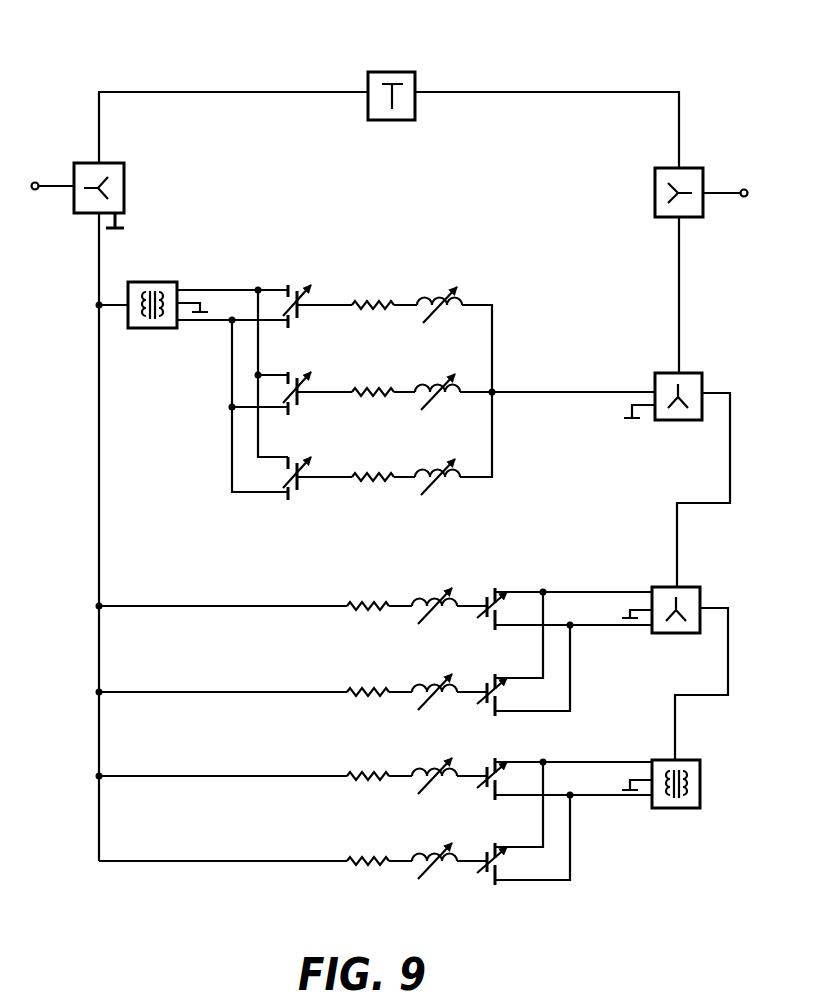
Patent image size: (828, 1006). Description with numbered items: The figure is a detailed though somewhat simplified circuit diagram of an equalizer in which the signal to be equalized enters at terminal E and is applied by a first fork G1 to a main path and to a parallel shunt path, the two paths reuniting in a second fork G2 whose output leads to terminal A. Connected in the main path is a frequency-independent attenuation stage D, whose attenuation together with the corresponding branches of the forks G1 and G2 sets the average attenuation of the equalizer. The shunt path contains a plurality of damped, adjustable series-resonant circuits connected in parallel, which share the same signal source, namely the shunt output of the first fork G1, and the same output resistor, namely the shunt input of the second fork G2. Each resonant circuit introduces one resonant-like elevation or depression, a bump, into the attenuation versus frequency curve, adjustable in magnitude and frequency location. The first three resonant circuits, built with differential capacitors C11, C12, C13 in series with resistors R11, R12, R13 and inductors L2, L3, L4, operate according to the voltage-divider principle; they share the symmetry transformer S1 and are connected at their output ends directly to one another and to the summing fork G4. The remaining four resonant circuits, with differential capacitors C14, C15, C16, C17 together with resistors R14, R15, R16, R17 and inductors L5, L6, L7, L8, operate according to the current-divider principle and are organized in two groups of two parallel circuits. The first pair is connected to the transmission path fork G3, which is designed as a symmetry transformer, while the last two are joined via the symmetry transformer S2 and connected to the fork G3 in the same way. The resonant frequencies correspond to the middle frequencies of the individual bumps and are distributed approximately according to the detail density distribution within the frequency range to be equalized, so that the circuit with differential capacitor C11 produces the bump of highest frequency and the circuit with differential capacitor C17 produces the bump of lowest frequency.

The first fork G1 is at (114, 188).
The second fork G2 is at (658, 192).
The transmission path fork G3 is at (678, 608).
The summing fork G4 is at (681, 395).
The frequency-independent attenuation stage D is at (391, 85).
The input terminal E is at (50, 200).
The output terminal A is at (726, 207).
The symmetry transformer S1 is at (168, 317).
The symmetry transformer S2 is at (661, 798).
The differential capacitor C11 is at (307, 296).
The differential capacitor C12 is at (307, 383).
The differential capacitor C13 is at (307, 468).
The differential capacitor C14 is at (496, 598).
The differential capacitor C15 is at (496, 684).
The differential capacitor C16 is at (496, 768).
The differential capacitor C17 is at (496, 853).
The resistor R11 is at (373, 292).
The resistor R12 is at (373, 379).
The resistor R13 is at (373, 464).
The resistor R14 is at (368, 594).
The resistor R15 is at (368, 680).
The resistor R16 is at (368, 764).
The resistor R17 is at (368, 849).
The variable inductor L2 is at (439, 293).
The variable inductor L3 is at (437, 380).
The variable inductor L4 is at (437, 465).
The variable inductor L5 is at (434, 595).
The variable inductor L6 is at (434, 681).
The variable inductor L7 is at (434, 765).
The variable inductor L8 is at (434, 850).